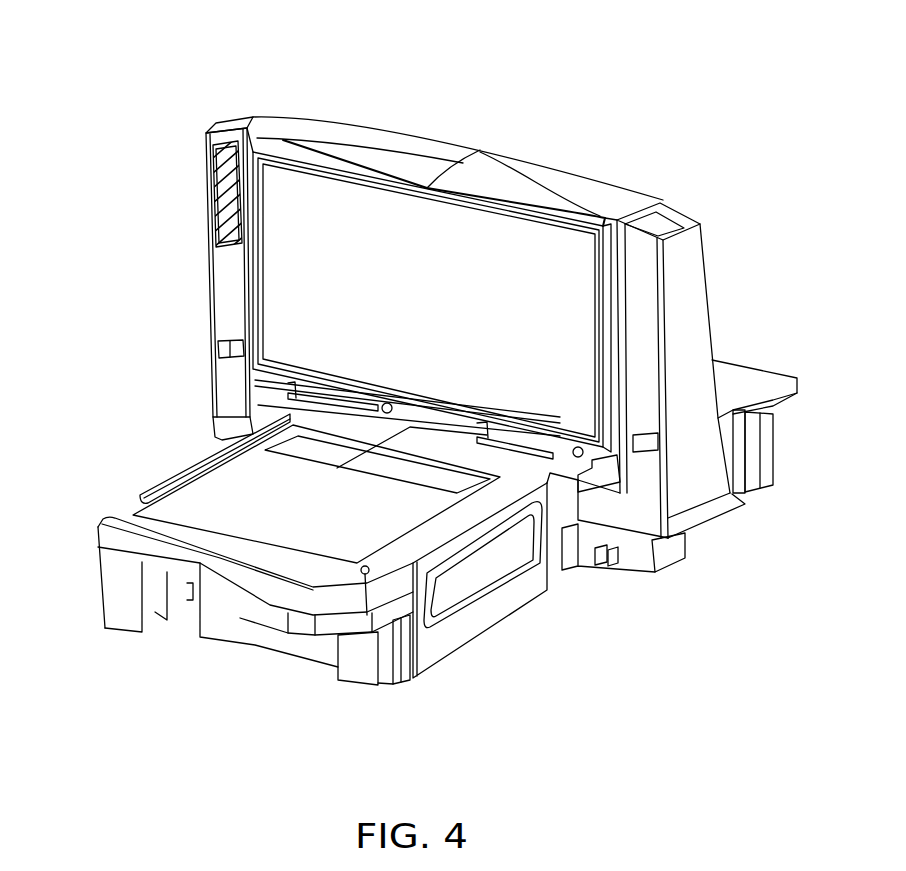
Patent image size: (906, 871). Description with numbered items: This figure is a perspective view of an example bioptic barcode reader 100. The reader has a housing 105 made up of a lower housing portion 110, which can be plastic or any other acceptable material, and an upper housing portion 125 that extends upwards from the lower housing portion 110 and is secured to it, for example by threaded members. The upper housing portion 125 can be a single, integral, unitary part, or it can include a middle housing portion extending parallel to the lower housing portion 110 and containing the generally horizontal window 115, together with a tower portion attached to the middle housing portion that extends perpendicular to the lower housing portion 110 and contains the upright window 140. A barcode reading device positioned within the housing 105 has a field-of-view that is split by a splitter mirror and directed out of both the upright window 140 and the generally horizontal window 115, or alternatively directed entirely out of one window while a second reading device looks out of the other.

The bioptic barcode reader 100 is at (104, 50).
The housing 105 is at (696, 540).
The lower housing portion 110 is at (710, 492).
The generally horizontal window 115 is at (203, 513).
The upper housing portion 125 is at (683, 347).
The upright window 140 is at (298, 297).